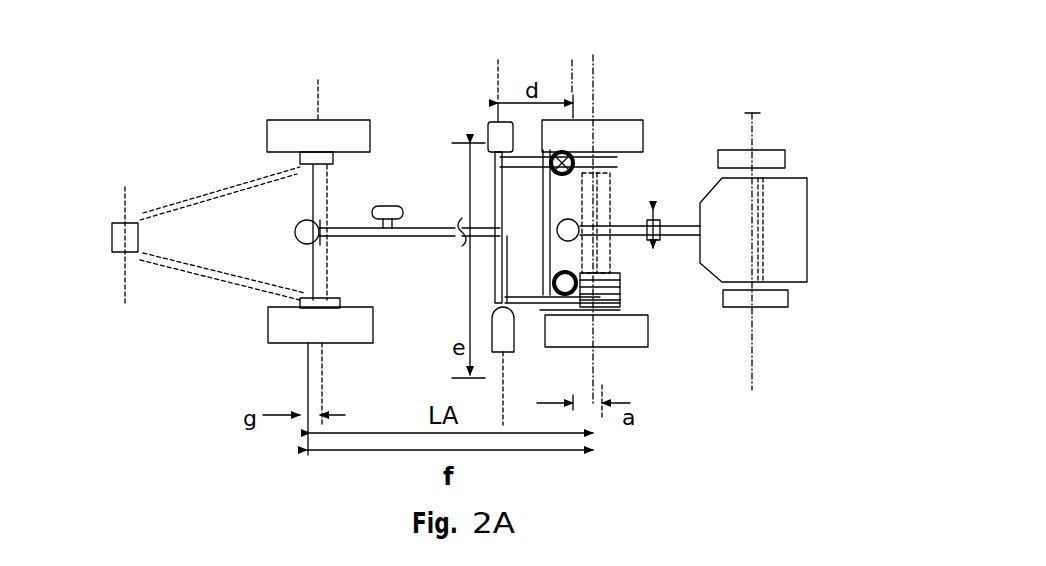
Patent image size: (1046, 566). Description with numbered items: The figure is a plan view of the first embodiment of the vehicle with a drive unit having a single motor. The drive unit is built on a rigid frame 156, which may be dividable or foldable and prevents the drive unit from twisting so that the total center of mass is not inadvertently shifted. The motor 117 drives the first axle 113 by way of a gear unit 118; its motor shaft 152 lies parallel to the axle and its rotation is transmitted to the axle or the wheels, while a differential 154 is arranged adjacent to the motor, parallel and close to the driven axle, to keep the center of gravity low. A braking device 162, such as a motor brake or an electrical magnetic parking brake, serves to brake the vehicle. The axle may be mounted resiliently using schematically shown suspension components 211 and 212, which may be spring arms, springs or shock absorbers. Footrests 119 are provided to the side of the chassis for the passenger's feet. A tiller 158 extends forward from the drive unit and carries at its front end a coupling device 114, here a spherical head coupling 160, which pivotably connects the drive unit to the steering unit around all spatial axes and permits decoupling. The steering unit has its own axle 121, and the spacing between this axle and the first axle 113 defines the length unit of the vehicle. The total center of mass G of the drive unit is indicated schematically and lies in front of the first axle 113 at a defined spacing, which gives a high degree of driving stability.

The first axle 113 is at (601, 118).
The coupling device 114 is at (283, 272).
The motor 117 is at (609, 208).
The gear unit 118 is at (624, 316).
The footrests 119 is at (480, 142).
The axle 121 is at (305, 140).
The motor shaft 152 is at (605, 245).
The differential 154 is at (627, 282).
The rigid frame 156 is at (417, 180).
The tiller 158 is at (413, 242).
The spherical head coupling 160 is at (288, 224).
The braking device 162 is at (303, 157).
The suspension component 211 is at (560, 152).
The suspension component 212 is at (567, 294).
The total center of mass G is at (580, 252).